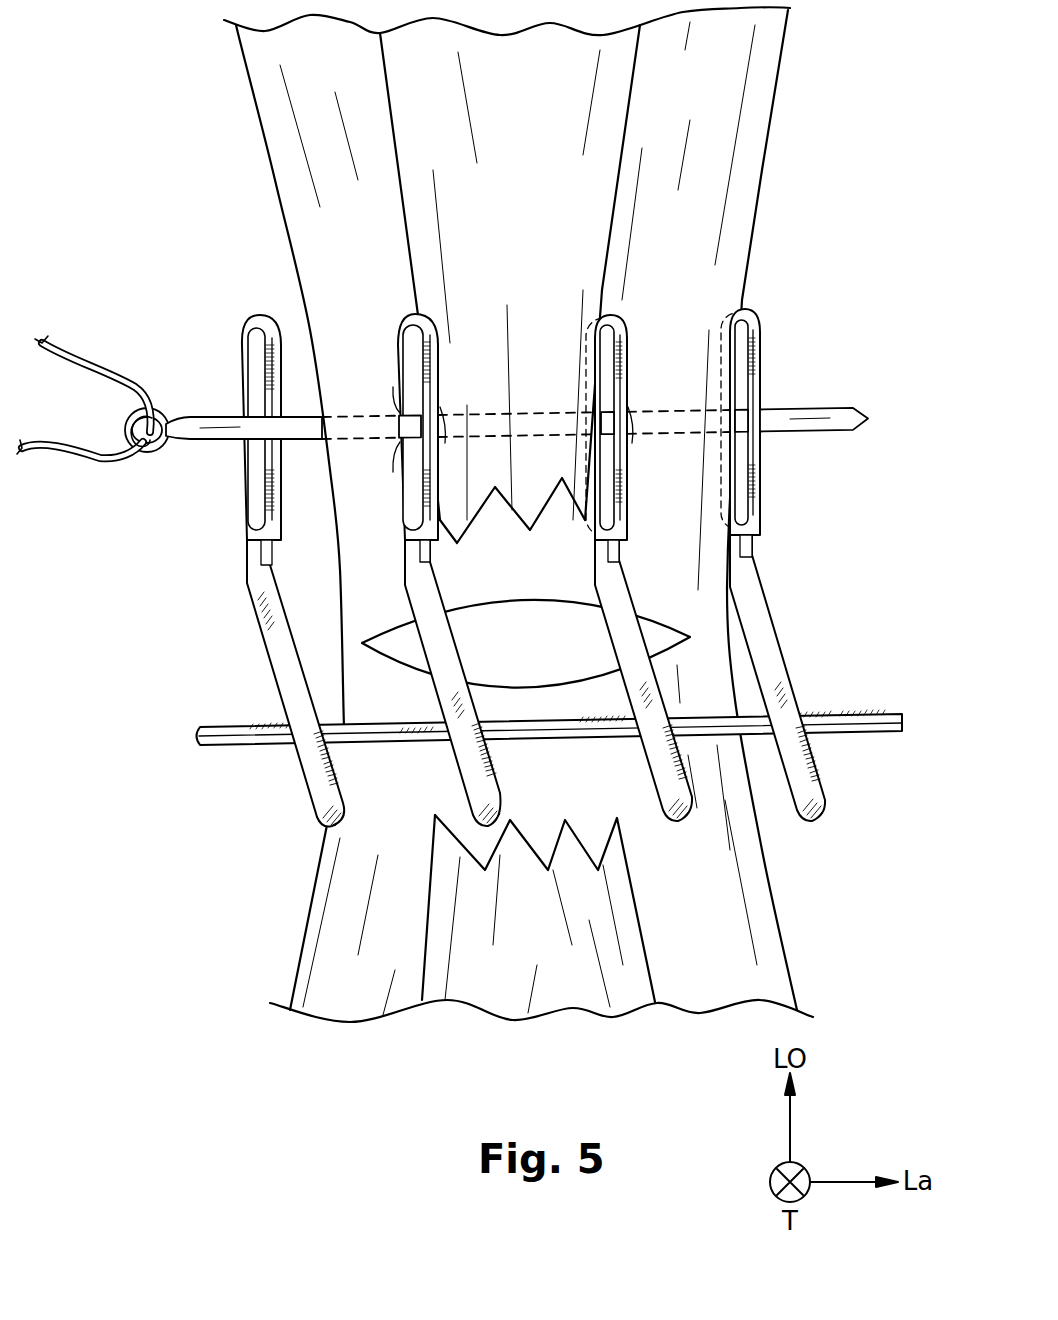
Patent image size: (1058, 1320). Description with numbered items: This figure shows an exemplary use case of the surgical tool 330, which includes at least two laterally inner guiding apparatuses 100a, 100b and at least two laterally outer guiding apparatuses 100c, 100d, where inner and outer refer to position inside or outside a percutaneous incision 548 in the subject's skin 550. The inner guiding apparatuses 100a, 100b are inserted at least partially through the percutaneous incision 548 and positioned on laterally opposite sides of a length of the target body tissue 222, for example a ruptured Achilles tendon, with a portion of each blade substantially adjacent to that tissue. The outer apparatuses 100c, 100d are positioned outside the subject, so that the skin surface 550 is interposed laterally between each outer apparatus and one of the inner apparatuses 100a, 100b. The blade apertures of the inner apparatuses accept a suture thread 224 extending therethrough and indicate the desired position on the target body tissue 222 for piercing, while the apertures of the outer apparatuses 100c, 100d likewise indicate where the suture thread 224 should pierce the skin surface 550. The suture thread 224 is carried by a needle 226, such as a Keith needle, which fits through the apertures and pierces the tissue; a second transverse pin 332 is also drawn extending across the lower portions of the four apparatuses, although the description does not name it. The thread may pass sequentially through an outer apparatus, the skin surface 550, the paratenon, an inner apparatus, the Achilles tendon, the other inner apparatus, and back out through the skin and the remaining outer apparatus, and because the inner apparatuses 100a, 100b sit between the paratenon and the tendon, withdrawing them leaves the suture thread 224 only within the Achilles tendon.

The laterally inner guiding apparatus 100a is at (395, 282).
The laterally inner guiding apparatus 100b is at (640, 283).
The laterally outer guiding apparatus 100c is at (234, 291).
The laterally outer guiding apparatus 100d is at (774, 278).
The target body tissue 222 is at (612, 77).
The suture thread 224 is at (108, 372).
The needle 226 is at (208, 443).
The surgical tool 330 is at (842, 880).
The second transverse pin 332 is at (885, 738).
The percutaneous incision 548 is at (707, 634).
The skin surface 550 is at (745, 132).